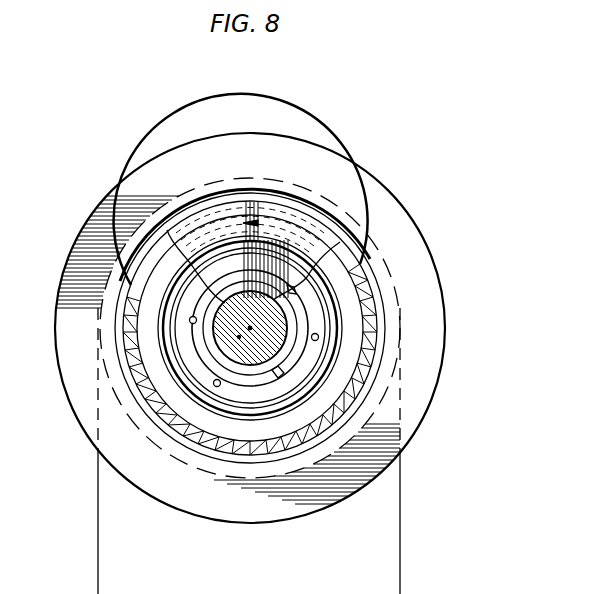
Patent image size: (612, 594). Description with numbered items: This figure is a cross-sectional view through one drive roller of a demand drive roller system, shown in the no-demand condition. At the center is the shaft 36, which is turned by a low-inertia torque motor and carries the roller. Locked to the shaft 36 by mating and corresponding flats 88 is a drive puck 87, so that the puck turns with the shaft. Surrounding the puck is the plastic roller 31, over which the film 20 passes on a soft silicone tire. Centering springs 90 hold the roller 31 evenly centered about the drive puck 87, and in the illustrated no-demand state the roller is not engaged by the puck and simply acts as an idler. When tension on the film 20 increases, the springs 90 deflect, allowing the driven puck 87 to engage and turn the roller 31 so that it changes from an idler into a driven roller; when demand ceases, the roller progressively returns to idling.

The film 20 is at (400, 512).
The roller 31 is at (437, 367).
The shaft 36 is at (239, 337).
The drive puck 87 is at (380, 310).
The flats 88 is at (237, 297).
The centering springs 90 is at (246, 398).